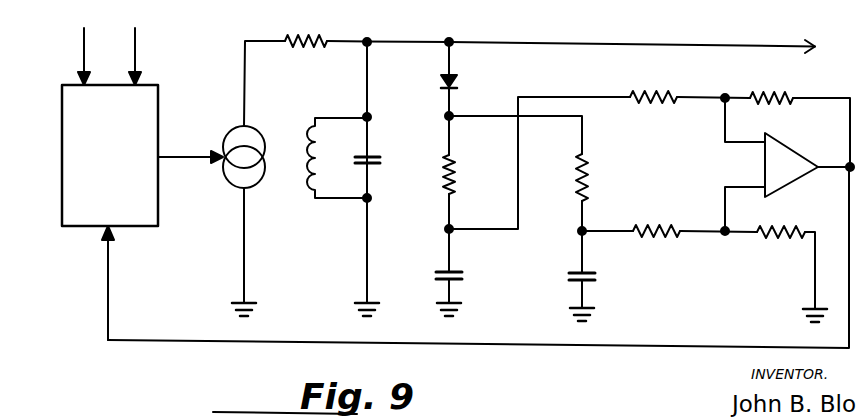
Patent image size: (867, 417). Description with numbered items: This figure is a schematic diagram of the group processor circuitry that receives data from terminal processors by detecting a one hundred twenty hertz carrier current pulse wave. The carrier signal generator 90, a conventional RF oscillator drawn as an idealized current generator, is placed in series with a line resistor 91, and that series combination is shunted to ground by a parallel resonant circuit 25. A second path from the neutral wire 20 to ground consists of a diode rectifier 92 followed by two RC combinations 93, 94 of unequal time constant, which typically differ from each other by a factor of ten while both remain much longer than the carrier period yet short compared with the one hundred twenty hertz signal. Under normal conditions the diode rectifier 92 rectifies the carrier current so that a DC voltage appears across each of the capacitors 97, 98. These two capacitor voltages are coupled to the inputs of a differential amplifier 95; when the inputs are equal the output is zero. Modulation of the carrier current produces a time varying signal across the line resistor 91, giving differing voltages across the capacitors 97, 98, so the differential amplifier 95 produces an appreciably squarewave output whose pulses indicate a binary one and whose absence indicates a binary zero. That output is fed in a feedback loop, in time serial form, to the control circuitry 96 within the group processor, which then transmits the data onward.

The neutral wire 20 is at (542, 40).
The parallel resonant circuit 25 is at (338, 143).
The carrier signal generator 90 is at (268, 131).
The line resistor 91 is at (326, 40).
The diode rectifier 92 is at (458, 80).
The RC combination 93 is at (434, 150).
The RC combination 94 is at (567, 152).
The differential amplifier 95 is at (787, 167).
The control circuitry 96 is at (123, 172).
The capacitor 97 is at (462, 284).
The capacitor 98 is at (595, 286).